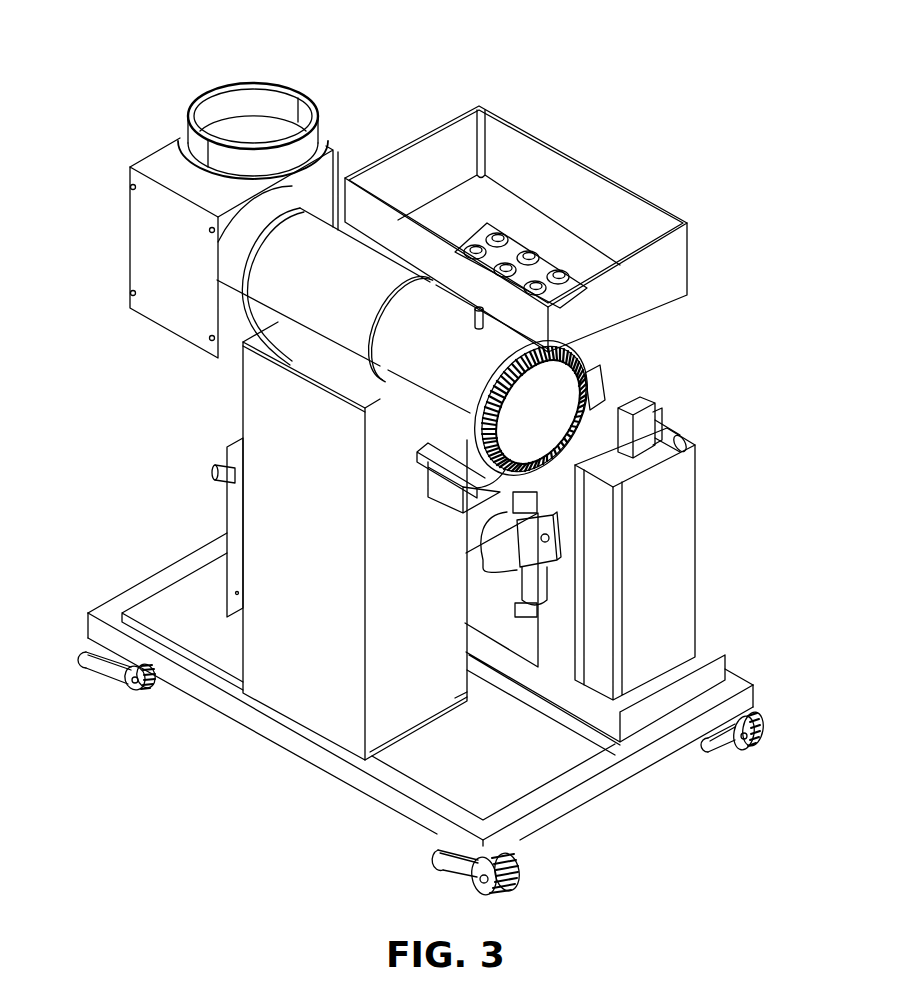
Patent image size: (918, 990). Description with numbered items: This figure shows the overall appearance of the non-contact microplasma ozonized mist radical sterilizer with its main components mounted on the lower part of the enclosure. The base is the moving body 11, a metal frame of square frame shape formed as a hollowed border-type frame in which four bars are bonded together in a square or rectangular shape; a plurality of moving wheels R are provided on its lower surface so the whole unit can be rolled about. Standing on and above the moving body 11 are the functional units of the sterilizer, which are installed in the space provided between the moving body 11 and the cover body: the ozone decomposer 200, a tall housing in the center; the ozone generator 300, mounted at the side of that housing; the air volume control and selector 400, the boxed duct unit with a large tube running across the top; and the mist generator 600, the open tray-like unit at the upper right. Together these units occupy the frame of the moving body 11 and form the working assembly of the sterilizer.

The moving body 11 is at (535, 827).
The ozone decomposer 200 is at (307, 678).
The ozone generator 300 is at (237, 518).
The air volume control and selector 400 is at (283, 300).
The mist generator 600 is at (540, 163).
The moving wheels R is at (750, 740).